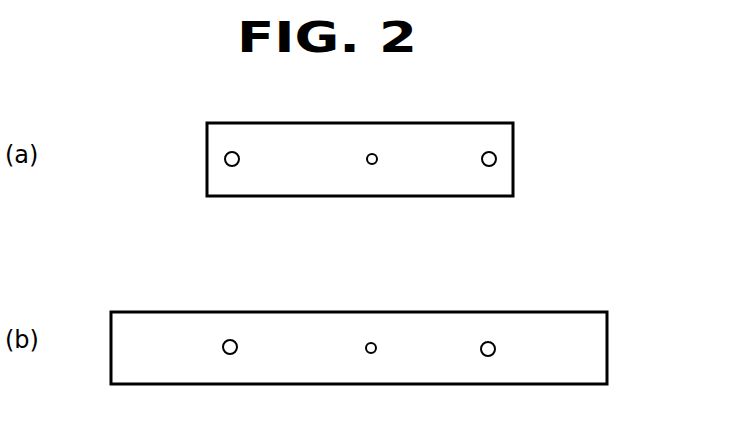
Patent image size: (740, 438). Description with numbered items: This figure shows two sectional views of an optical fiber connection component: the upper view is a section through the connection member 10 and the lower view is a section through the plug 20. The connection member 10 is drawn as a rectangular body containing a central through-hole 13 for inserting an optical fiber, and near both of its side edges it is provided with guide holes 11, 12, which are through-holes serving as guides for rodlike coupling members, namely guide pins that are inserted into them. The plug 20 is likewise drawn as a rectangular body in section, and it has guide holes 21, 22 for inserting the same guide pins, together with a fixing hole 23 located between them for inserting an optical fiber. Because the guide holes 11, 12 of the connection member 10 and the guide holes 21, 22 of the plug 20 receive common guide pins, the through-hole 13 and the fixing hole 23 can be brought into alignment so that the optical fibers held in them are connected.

The connection member 10 is at (513, 147).
The guide hole 11 is at (232, 152).
The guide hole 12 is at (489, 152).
The through-hole 13 is at (372, 154).
The plug 20 is at (607, 350).
The guide hole 21 is at (230, 340).
The guide hole 22 is at (488, 342).
The fixing hole 23 is at (371, 343).